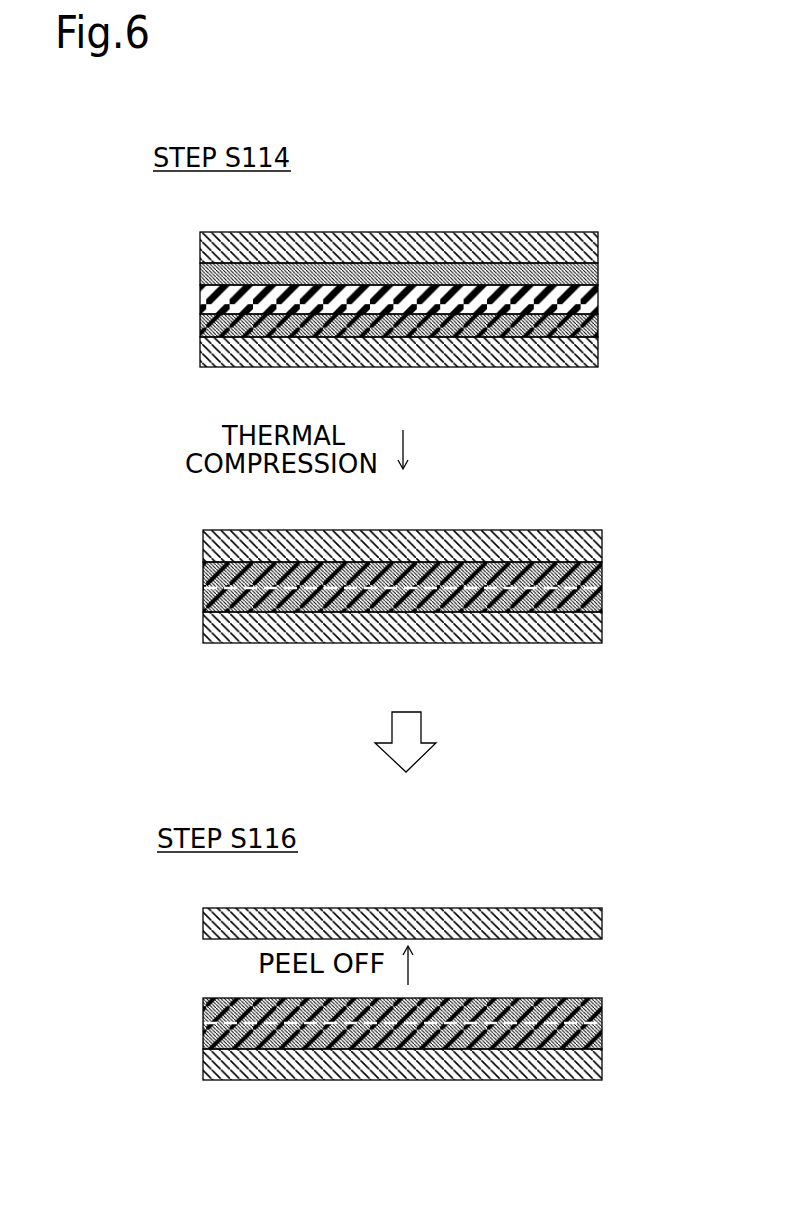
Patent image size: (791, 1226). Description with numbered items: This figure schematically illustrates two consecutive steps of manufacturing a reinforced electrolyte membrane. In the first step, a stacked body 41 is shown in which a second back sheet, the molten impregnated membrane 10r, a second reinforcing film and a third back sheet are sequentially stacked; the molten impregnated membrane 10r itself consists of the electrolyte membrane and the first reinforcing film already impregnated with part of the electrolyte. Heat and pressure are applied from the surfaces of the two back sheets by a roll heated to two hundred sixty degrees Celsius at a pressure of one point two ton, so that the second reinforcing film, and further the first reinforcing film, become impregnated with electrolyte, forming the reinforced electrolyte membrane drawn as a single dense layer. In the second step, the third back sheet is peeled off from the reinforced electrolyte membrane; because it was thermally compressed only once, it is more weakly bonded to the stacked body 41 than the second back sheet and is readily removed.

The stacked body 41 is at (453, 254).
The molten impregnated membrane 10r is at (453, 312).